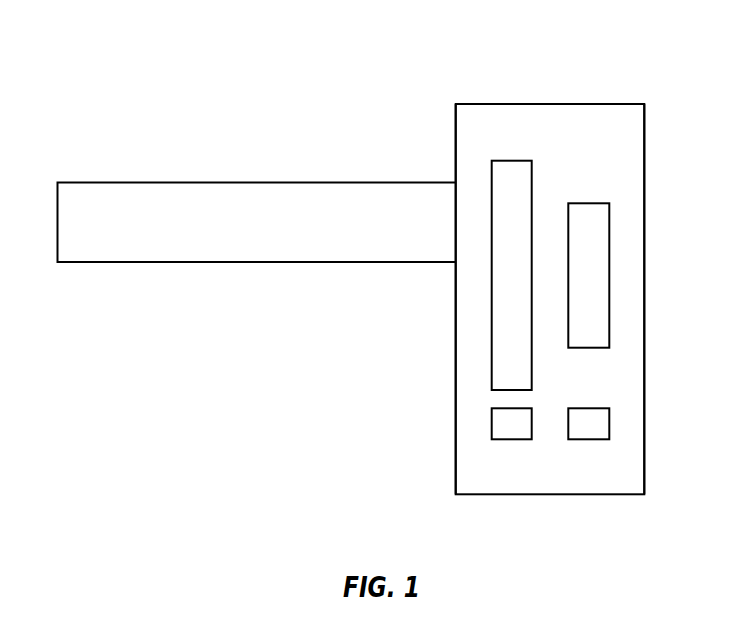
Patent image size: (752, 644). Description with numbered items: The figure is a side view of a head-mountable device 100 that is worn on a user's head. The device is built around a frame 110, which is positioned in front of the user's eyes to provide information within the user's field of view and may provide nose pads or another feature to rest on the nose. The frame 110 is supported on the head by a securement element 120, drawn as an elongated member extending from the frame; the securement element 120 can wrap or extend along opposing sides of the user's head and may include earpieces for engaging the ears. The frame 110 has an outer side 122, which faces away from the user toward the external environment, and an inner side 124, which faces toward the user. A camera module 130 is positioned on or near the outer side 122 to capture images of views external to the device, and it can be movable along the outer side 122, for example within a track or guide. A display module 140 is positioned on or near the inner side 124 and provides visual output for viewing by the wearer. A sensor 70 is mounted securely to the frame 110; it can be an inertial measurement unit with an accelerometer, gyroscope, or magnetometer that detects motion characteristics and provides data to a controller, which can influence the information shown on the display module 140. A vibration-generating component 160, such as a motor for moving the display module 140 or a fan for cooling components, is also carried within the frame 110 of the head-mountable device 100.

The head-mountable device 100 is at (52, 86).
The frame 110 is at (547, 103).
The securement element 120 is at (189, 204).
The outer side 122 is at (644, 380).
The inner side 124 is at (455, 407).
The camera module 130 is at (609, 277).
The display module 140 is at (492, 273).
The sensor 70 is at (509, 440).
The vibration-generating component 160 is at (588, 440).